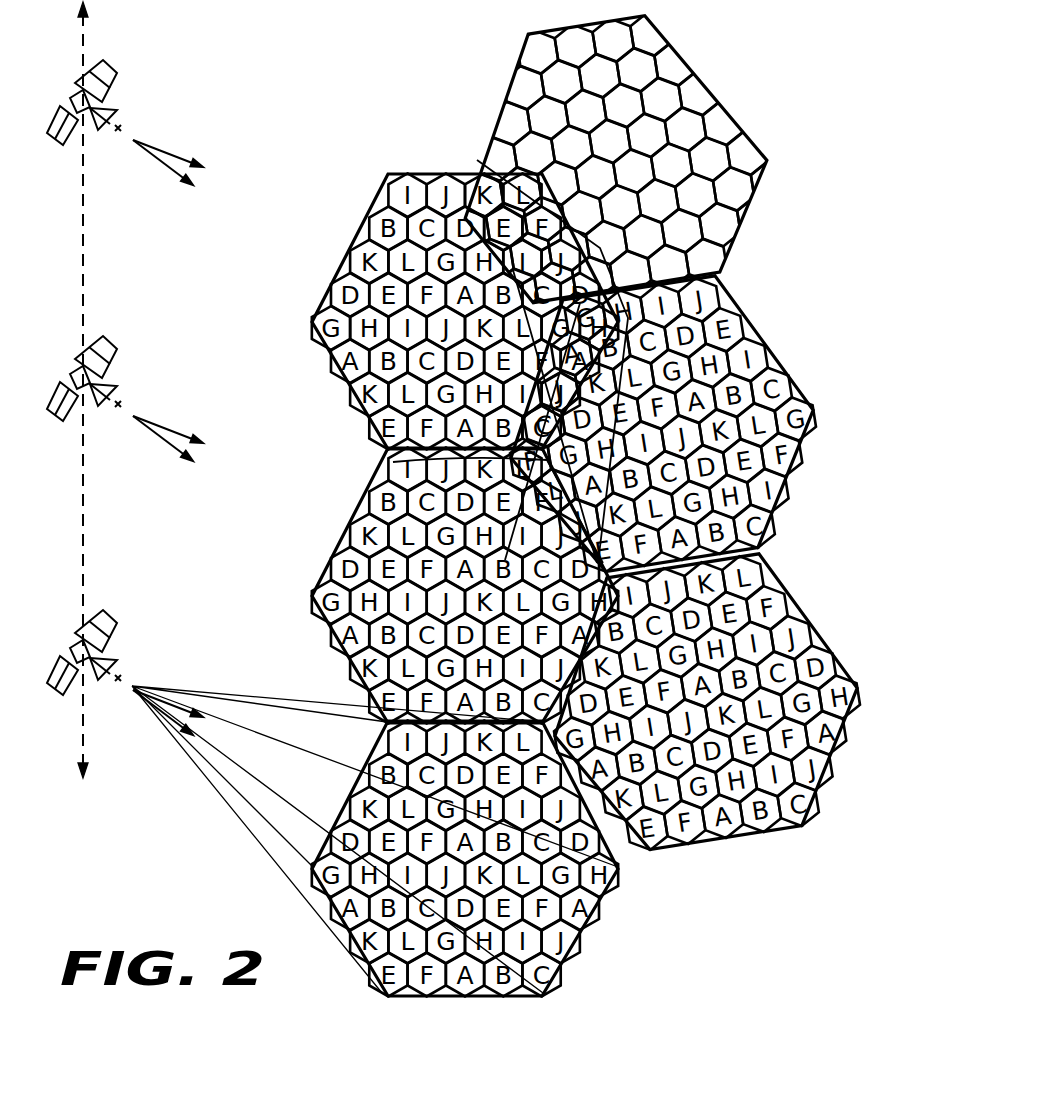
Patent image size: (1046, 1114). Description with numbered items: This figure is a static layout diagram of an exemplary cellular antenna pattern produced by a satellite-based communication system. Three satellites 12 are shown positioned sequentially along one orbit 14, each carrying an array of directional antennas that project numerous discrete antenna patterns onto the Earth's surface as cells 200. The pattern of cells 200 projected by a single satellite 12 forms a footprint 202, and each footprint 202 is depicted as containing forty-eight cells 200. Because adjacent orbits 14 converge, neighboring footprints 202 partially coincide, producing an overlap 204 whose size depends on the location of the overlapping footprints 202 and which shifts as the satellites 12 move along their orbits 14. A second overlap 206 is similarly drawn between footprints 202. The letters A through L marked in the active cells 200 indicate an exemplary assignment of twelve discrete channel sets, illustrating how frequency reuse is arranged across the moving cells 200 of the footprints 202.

The satellite 12 is at (112, 611).
The orbit 14 is at (80, 516).
The cell 200 is at (457, 1000).
The footprint 202 is at (593, 932).
The overlap 204 is at (481, 160).
The cluster footprint outline 206 is at (393, 463).